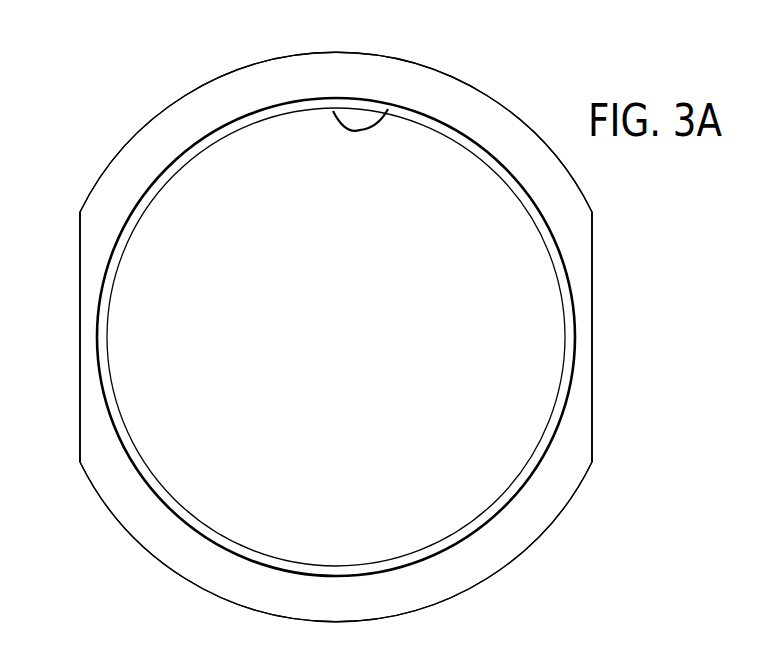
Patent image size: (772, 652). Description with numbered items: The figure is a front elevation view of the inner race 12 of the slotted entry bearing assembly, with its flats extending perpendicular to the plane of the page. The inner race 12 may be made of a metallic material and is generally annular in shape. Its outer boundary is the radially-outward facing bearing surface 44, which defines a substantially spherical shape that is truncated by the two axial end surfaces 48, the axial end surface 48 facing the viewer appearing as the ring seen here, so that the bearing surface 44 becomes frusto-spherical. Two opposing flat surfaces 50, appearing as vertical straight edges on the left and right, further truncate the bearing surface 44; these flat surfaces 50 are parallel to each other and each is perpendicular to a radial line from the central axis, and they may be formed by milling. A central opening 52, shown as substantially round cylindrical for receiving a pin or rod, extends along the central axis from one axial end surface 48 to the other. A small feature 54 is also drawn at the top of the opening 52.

The inner race 12 is at (119, 100).
The radially-outward facing bearing surface 44 is at (504, 125).
The axial end surfaces 48 is at (571, 338).
The flat surfaces 50 is at (80, 348).
The central opening 52 is at (141, 282).
The notch 54 is at (388, 123).